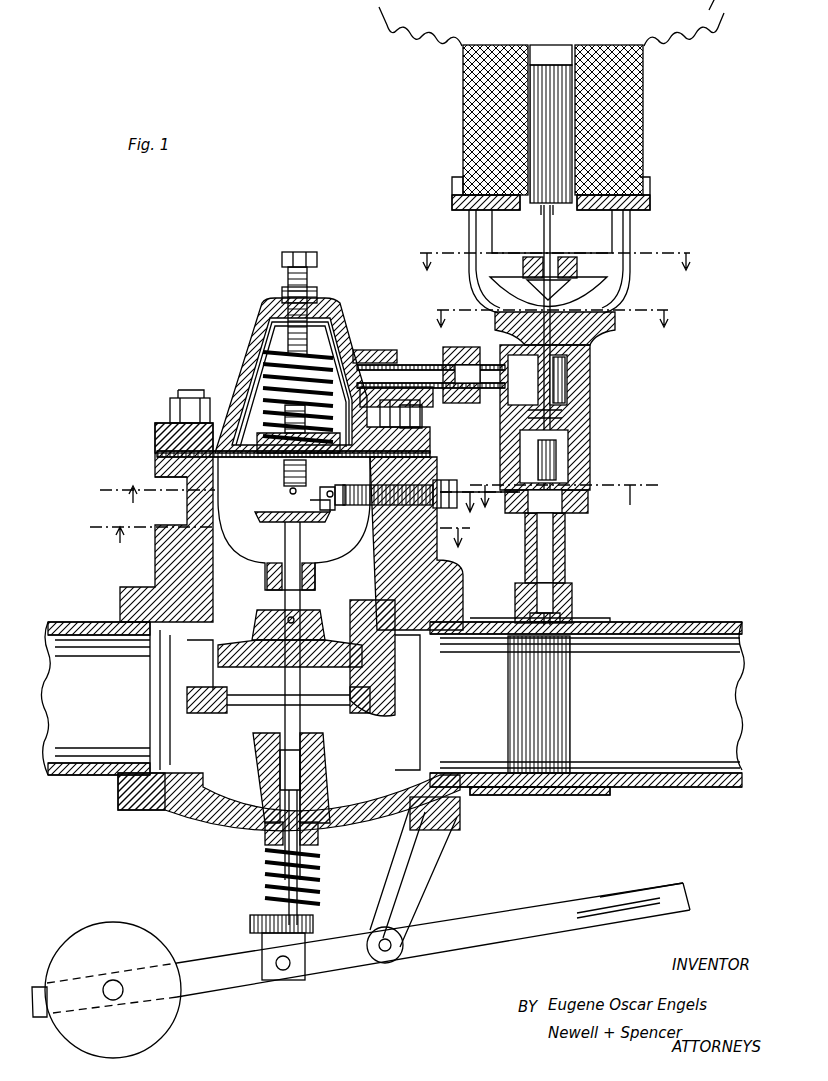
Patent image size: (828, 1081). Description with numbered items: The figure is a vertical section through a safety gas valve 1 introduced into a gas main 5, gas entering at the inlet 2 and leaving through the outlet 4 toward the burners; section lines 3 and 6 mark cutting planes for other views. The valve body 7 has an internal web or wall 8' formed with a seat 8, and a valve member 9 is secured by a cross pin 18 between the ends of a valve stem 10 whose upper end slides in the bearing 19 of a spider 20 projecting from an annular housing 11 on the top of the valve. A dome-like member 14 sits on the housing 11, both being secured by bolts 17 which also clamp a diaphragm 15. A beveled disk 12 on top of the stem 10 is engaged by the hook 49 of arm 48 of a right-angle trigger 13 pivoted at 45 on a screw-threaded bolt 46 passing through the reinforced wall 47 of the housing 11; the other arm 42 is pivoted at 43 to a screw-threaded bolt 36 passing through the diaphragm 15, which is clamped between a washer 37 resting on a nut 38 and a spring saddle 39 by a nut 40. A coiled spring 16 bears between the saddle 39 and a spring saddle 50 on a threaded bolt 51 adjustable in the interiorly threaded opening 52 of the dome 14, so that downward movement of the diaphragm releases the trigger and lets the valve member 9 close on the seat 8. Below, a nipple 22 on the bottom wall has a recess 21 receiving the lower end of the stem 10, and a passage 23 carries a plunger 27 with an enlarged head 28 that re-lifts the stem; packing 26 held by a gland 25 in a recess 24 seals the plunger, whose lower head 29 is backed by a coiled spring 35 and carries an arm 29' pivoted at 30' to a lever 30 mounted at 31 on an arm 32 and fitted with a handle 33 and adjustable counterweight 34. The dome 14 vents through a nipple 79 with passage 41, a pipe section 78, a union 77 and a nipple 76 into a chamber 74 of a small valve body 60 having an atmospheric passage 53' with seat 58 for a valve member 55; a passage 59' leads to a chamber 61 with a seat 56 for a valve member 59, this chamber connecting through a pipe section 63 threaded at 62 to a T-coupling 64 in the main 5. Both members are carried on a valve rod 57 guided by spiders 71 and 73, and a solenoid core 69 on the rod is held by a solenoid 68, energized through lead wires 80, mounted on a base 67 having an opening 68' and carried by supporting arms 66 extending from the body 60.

The valve 1 is at (290, 637).
The inlet 2 is at (84, 790).
The section line 3- 3 is at (280, 545).
The outlet 4 is at (420, 724).
The gas main 5 is at (758, 690).
The section line 6- 6 is at (565, 629).
The valve body 7 is at (140, 810).
The seat 8 is at (278, 693).
The internal web or wall 8' is at (189, 665).
The valve member 9 is at (218, 653).
The valve stem 10 is at (285, 600).
The annular housing 11 is at (440, 542).
The disk 12 is at (292, 507).
The trigger 13 is at (420, 555).
The dome-like member 14 is at (252, 328).
The diaphragm 15 is at (157, 453).
The coiled spring 16 is at (258, 345).
The bolts 17 is at (178, 390).
The cross pin 18 is at (288, 620).
The bearing 19 is at (272, 563).
The spider 20 is at (220, 525).
The recess 21 is at (300, 768).
The nipple 22 is at (258, 745).
The passage 23 is at (320, 810).
The recess 24 is at (265, 838).
The gland 25 is at (268, 846).
The packing 26 is at (318, 832).
The plunger 27 is at (300, 862).
The enlarged head 28 is at (310, 795).
The head 29 is at (262, 924).
The arm 29' is at (328, 928).
The lever 30 is at (361, 950).
The pivot connection 30' is at (278, 978).
The pivot 31 is at (392, 952).
The arm 32 is at (430, 852).
The handle 33 is at (650, 905).
The adjustable counterweight 34 is at (97, 932).
The coiled spring 35 is at (265, 872).
The screw-threaded bolt 36 is at (262, 362).
The washer 37 is at (155, 466).
The nut 38 is at (160, 480).
The spring saddle 39 is at (263, 436).
The nut 40 is at (285, 412).
The passage 41 is at (365, 350).
The arm 42 is at (322, 490).
The pivot connection 43 is at (289, 491).
The pivot 45 is at (338, 486).
The screw-threaded bolt 46 is at (445, 482).
The reinforcement 47 is at (437, 460).
The arm 48 is at (332, 522).
The hook 49 is at (322, 522).
The spring saddle 50 is at (262, 312).
The threaded bolt 51 is at (317, 270).
The interiorly threaded opening 52 is at (283, 296).
The passage 53' is at (599, 417).
The valve member 55 is at (610, 290).
The seat 56 is at (600, 433).
The valve rod 57 is at (556, 233).
The seat 58 is at (600, 330).
The valve member 59 is at (581, 415).
The passage 59' is at (654, 399).
The valve body 60 is at (572, 432).
The chamber 61 is at (556, 450).
The threaded connection 62 is at (575, 513).
The pipe section 63 is at (566, 556).
The T-coupling 64 is at (572, 596).
The supporting arms 66 is at (476, 288).
The base 67 is at (650, 192).
The solenoid 68 is at (534, 120).
The opening 68' is at (531, 226).
The solenoid core 69 is at (555, 62).
The spider 71 is at (588, 488).
The bearing and spider 73 is at (505, 258).
The chamber 74 is at (565, 388).
The nipple 76 is at (472, 405).
The union 77 is at (443, 351).
The pipe section 78 is at (405, 362).
The nipple 79 is at (380, 350).
The lead wires 80 is at (425, 38).